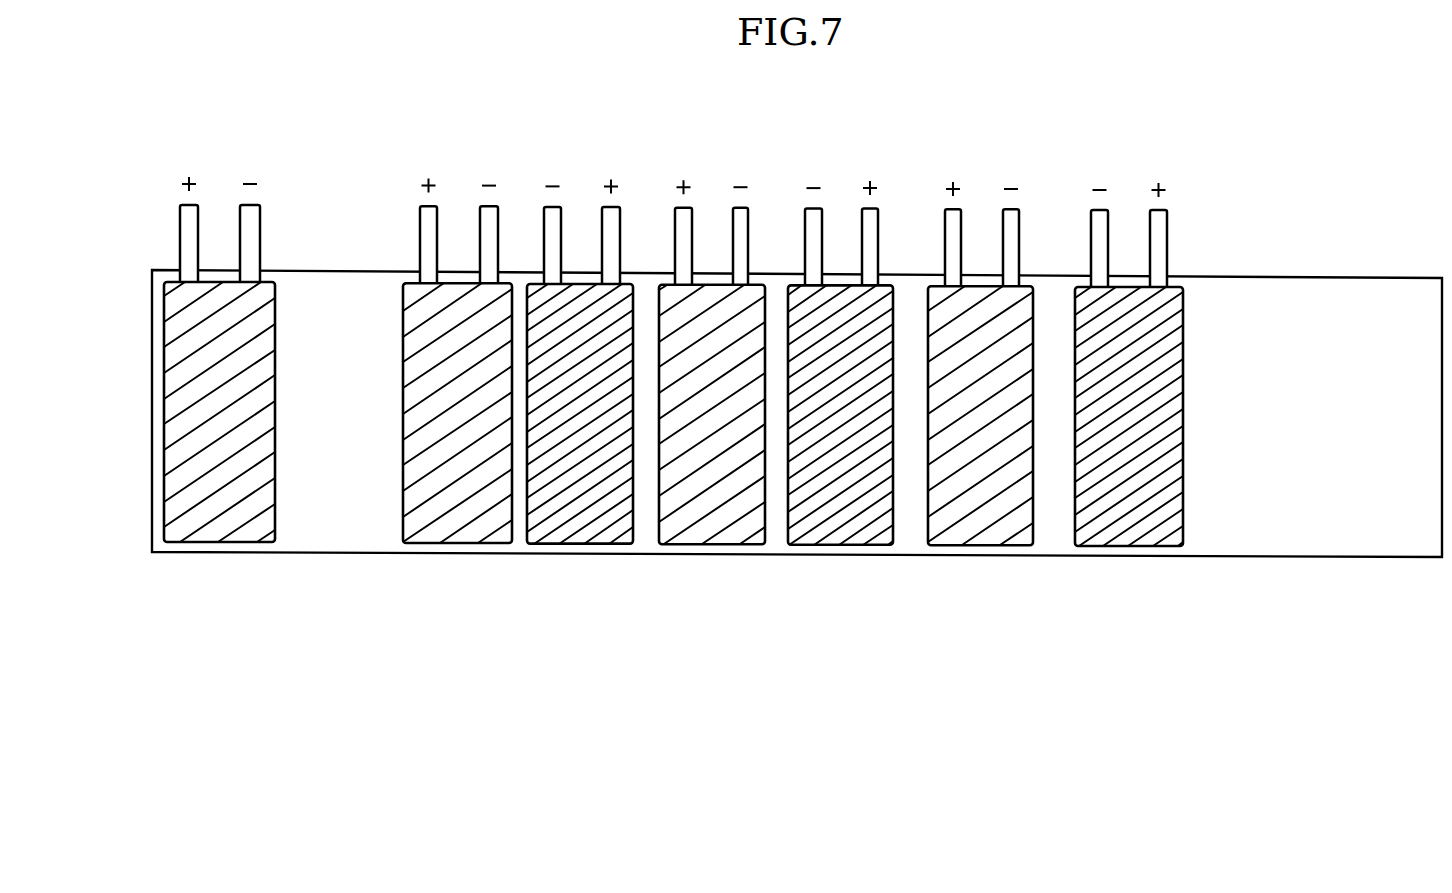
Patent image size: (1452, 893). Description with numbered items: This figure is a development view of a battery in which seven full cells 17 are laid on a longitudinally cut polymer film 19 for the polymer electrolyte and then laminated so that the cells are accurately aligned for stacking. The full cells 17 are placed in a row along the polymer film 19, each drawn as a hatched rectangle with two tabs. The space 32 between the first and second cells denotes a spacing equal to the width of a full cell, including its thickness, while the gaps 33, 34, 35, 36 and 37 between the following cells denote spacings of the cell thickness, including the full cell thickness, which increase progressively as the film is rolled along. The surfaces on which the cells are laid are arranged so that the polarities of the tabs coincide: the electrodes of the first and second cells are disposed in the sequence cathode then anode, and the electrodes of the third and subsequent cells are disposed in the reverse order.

The battery cell 17 is at (212, 520).
The polymer film 19 is at (1310, 527).
The space 32 is at (333, 530).
The gap 33 is at (517, 530).
The gap 34 is at (648, 530).
The gap 35 is at (779, 530).
The gap 36 is at (912, 530).
The gap 37 is at (1058, 530).